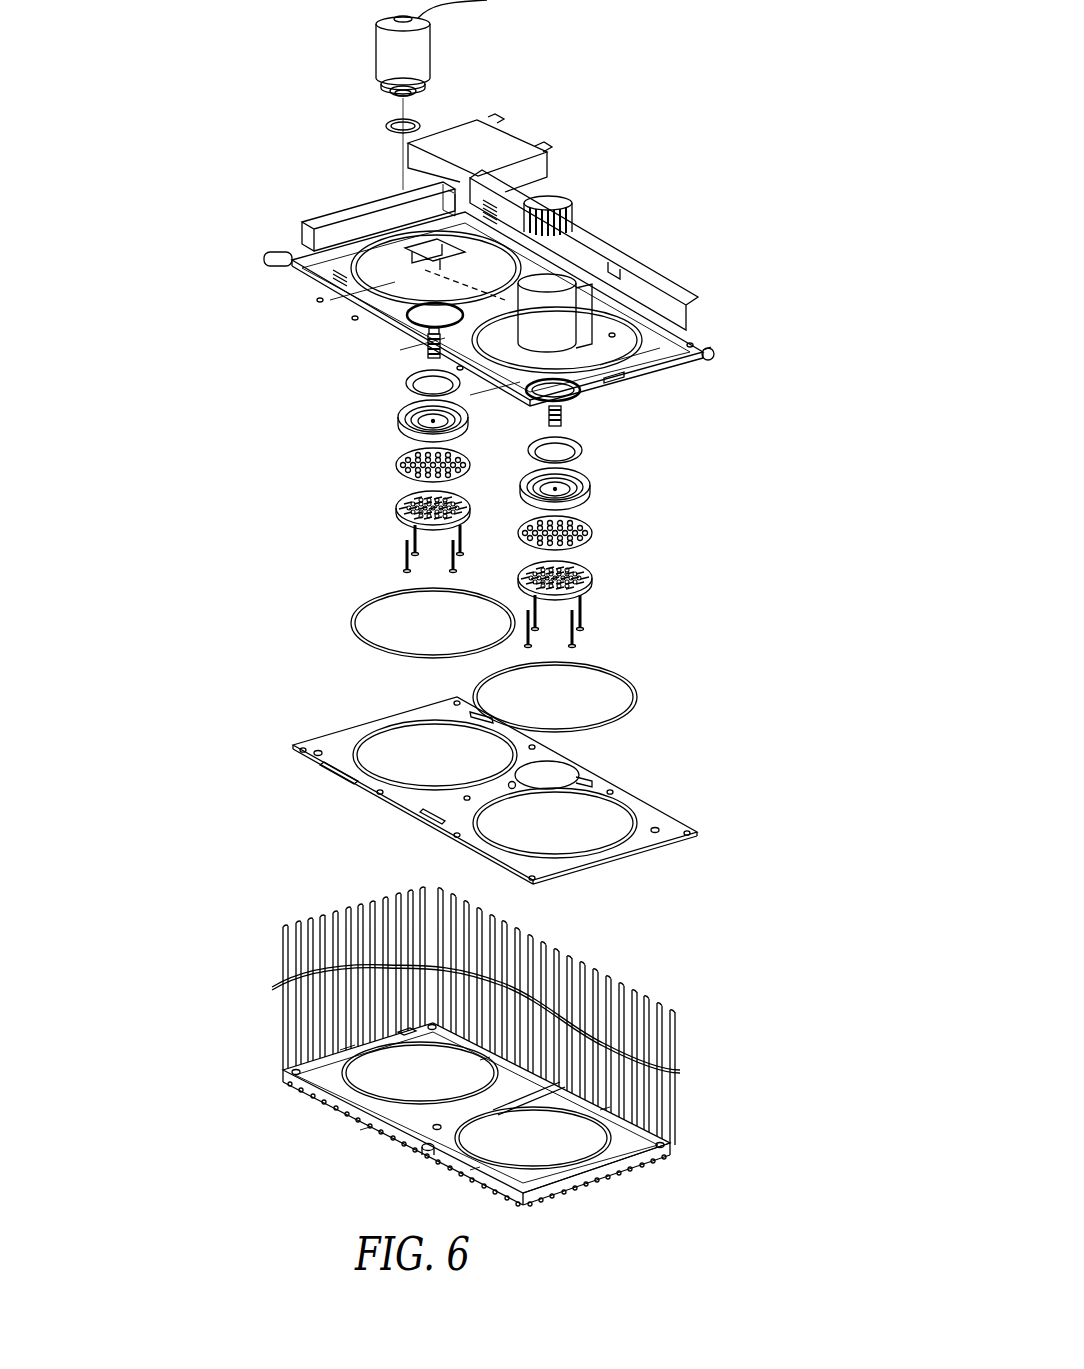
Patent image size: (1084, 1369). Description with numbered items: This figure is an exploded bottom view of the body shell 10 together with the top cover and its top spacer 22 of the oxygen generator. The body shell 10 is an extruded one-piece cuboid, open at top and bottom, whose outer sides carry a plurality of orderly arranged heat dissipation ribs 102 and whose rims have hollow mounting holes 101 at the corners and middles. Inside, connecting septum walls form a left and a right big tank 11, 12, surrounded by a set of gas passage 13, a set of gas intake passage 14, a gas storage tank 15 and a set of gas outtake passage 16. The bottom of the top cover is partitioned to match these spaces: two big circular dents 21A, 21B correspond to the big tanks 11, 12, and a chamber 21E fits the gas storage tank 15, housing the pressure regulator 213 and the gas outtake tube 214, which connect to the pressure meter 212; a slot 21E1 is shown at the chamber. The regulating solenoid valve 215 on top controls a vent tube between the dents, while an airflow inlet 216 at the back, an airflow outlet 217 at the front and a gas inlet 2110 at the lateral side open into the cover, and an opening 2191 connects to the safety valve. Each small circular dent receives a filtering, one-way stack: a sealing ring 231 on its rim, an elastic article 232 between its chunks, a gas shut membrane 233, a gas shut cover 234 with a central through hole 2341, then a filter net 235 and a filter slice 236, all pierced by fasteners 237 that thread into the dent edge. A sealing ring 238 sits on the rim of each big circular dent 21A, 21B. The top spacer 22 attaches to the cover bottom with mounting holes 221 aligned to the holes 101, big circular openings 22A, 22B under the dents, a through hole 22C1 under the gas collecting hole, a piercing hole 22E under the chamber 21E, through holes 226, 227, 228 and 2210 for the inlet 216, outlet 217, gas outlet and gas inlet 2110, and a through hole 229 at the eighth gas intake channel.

The body shell 10 is at (462, 1060).
The mounting holes 101 is at (293, 1072).
The heat dissipation ribs 102 is at (295, 948).
The left big tank 11 is at (363, 1078).
The right big tank 12 is at (568, 1153).
The gas passage 13 is at (407, 1035).
The gas intake passage 14 is at (615, 1152).
The gas storage tank 15 is at (532, 1085).
The gas outtake passage 16 is at (428, 1150).
The big circular dent 21A is at (390, 255).
The big circular dent 21B is at (615, 337).
The chamber 21E is at (565, 307).
The slot of positioning post 21E1 is at (617, 377).
The pressure meter 212 is at (517, 147).
The pressure regulator 213 is at (572, 215).
The gas outtake tube 214 is at (588, 252).
The regulating solenoid valve 215 is at (420, 52).
The airflow inlet 216 is at (500, 212).
The airflow outlet 217 is at (268, 252).
The gas inlet 2110 is at (714, 352).
The opening 2191 is at (422, 340).
The top spacer 22 is at (640, 813).
The big circular opening 22A is at (390, 738).
The big circular opening 22B is at (605, 835).
The through hole 22C1 is at (512, 789).
The piercing hole 22E is at (562, 775).
The mounting holes 221 is at (467, 801).
The through hole 2210 is at (658, 834).
The through hole 226 is at (440, 721).
The through hole 227 is at (318, 755).
The through hole 228 is at (333, 772).
The through hole 229 is at (427, 818).
The sealing ring 231 is at (407, 323).
The elastic article 232 is at (425, 355).
The gas shut membrane 233 is at (410, 387).
The gas shut cover 234 is at (433, 425).
The through hole 2341 is at (413, 440).
The filter net 235 is at (413, 477).
The filter slice 236 is at (413, 517).
The fasteners 237 is at (407, 558).
The sealing ring 238 is at (351, 623).